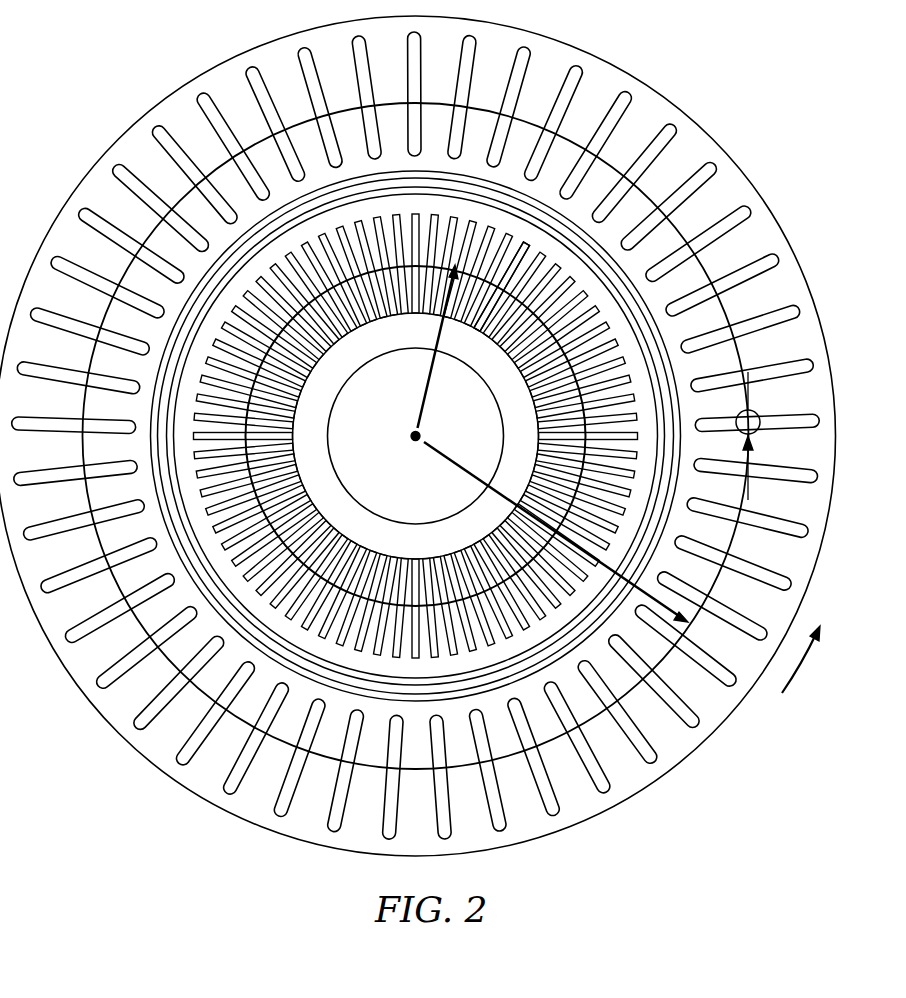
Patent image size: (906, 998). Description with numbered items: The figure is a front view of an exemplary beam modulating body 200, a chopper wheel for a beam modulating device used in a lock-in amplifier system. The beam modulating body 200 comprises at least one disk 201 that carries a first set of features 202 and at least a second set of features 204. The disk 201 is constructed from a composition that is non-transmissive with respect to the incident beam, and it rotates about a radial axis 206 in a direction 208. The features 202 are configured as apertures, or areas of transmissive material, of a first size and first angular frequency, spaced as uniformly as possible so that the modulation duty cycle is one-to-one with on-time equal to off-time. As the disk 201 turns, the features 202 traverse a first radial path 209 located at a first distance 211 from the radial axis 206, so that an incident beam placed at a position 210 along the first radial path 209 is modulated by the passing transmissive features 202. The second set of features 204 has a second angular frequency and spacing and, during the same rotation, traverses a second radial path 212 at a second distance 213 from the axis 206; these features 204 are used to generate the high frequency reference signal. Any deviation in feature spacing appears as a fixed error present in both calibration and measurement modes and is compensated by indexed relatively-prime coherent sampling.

The beam modulating body 200 is at (72, 65).
The disk 201 is at (118, 752).
The first set of features 202 is at (577, 67).
The second set of features 204 is at (527, 623).
The radial axis 206 is at (427, 437).
The direction 208 is at (802, 665).
The first radial path 209 is at (750, 498).
The position 210 is at (466, 470).
The first distance 211 is at (757, 412).
The second radial path 212 is at (498, 280).
The second distance 213 is at (437, 331).